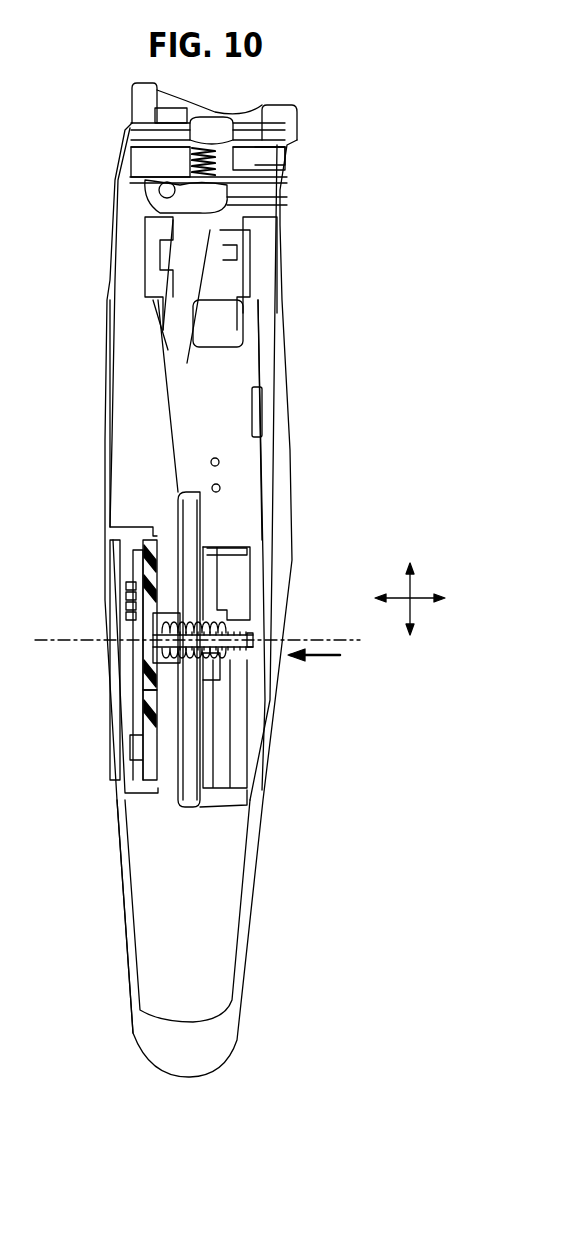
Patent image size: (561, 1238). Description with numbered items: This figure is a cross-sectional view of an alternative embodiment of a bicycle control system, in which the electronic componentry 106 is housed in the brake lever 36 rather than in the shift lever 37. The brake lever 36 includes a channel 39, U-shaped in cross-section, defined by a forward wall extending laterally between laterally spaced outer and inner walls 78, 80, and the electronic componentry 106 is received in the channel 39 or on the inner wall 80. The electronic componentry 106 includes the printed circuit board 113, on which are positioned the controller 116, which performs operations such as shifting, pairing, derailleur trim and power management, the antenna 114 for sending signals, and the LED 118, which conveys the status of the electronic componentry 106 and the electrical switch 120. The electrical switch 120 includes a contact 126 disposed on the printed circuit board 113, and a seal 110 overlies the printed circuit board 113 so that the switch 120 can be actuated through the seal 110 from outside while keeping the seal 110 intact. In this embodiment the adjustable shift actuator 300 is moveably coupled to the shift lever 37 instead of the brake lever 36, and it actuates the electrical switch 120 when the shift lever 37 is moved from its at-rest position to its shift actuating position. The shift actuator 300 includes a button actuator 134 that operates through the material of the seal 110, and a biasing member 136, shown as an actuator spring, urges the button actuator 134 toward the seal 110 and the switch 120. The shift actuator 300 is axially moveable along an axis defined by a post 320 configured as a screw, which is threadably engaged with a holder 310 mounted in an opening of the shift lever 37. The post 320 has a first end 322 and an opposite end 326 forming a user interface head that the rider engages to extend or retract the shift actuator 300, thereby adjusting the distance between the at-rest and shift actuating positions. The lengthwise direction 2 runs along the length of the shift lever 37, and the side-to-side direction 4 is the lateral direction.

The lengthwise direction 2 is at (412, 614).
The side-to-side direction 4 is at (423, 598).
The brake lever 36 is at (122, 514).
The shift lever 37 is at (249, 488).
The channel 39 is at (133, 485).
The outer wall 78 is at (257, 889).
The inner wall 80 is at (122, 905).
The electronic componentry 106 is at (145, 695).
The seal 110 is at (137, 743).
The printed circuit board 113 is at (233, 787).
The antenna 114 is at (130, 733).
The controller 116 is at (118, 590).
The LED 118 is at (232, 765).
The electrical switch 120 is at (240, 748).
The contact 126 is at (238, 658).
The button actuator 134 is at (152, 590).
The biasing member 136 is at (228, 578).
The shift actuator 300 is at (235, 722).
The holder 310 is at (232, 600).
The post 320 is at (235, 722).
The first end 322 is at (140, 648).
The end 326 is at (252, 629).